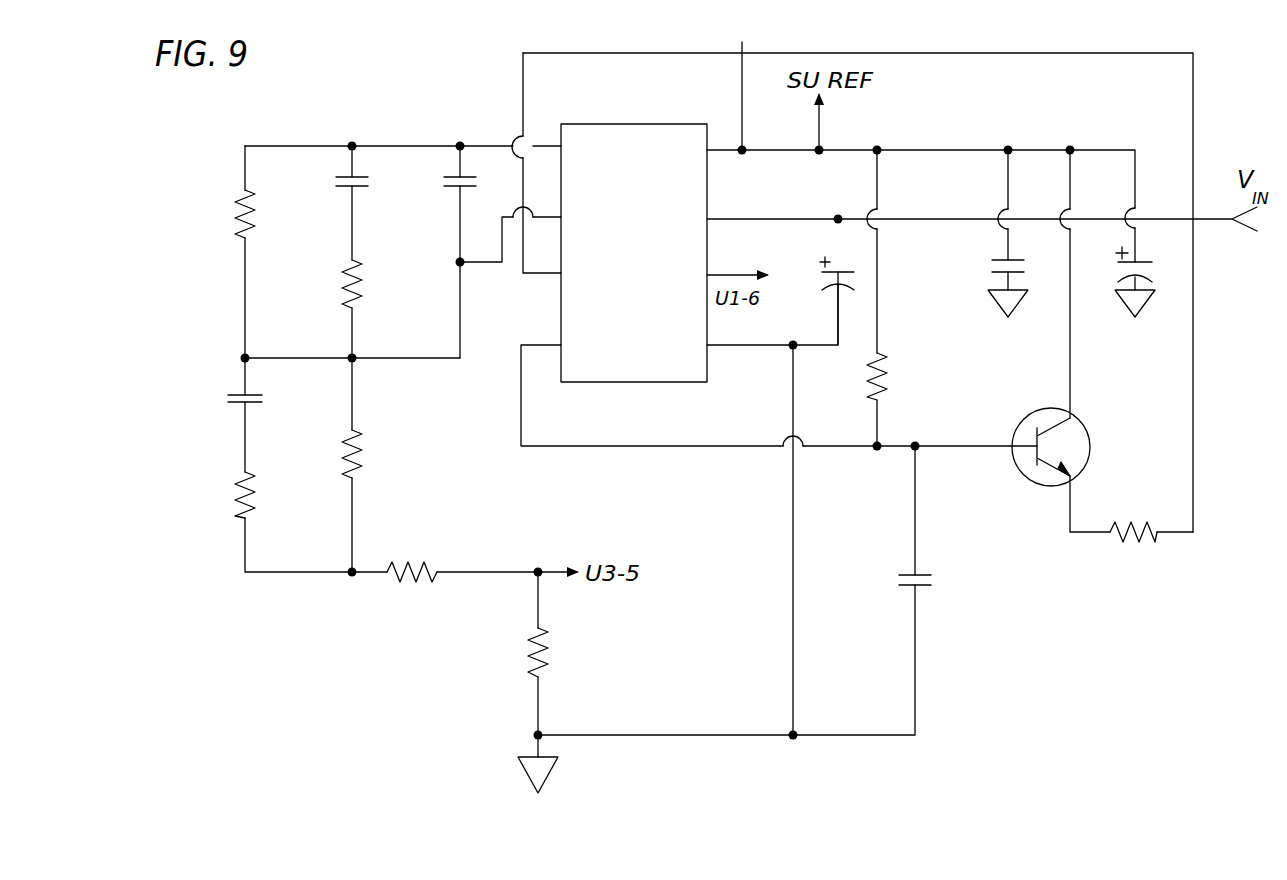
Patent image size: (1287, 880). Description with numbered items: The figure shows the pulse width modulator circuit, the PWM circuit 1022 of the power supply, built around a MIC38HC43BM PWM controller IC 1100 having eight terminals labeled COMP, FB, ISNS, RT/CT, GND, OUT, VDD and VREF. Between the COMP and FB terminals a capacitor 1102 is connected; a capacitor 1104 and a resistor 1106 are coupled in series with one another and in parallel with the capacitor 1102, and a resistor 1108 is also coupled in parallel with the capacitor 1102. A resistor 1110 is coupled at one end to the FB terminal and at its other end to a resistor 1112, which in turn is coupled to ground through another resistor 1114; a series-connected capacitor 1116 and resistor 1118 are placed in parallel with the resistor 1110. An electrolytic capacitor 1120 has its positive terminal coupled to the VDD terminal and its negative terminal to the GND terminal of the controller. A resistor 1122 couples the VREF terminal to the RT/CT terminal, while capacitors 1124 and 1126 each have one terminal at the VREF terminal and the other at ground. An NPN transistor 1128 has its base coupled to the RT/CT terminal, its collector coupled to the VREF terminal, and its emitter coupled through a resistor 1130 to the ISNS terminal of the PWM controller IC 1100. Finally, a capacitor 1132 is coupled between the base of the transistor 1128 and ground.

The PWM circuit 1022 is at (888, 40).
The PWM controller IC 1100 is at (712, 189).
The capacitor 1102 is at (456, 190).
The capacitor 1104 is at (346, 177).
The resistor 1106 is at (365, 286).
The resistor 1108 is at (240, 214).
The resistor 1110 is at (358, 461).
The resistor 1112 is at (410, 575).
The resistor 1114 is at (546, 661).
The capacitor 1116 is at (252, 393).
The resistor 1118 is at (249, 490).
The electrolytic capacitor 1120 is at (840, 286).
The resistor 1122 is at (882, 374).
The capacitor 1124 is at (1000, 268).
The capacitor 1126 is at (1140, 262).
The NPN transistor 1128 is at (1090, 432).
The resistor 1130 is at (1118, 525).
The capacitor 1132 is at (918, 575).